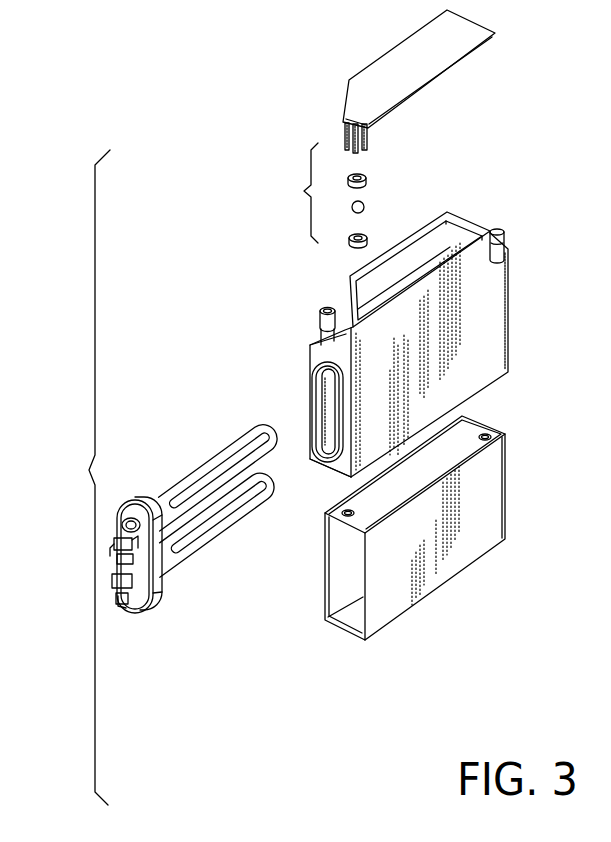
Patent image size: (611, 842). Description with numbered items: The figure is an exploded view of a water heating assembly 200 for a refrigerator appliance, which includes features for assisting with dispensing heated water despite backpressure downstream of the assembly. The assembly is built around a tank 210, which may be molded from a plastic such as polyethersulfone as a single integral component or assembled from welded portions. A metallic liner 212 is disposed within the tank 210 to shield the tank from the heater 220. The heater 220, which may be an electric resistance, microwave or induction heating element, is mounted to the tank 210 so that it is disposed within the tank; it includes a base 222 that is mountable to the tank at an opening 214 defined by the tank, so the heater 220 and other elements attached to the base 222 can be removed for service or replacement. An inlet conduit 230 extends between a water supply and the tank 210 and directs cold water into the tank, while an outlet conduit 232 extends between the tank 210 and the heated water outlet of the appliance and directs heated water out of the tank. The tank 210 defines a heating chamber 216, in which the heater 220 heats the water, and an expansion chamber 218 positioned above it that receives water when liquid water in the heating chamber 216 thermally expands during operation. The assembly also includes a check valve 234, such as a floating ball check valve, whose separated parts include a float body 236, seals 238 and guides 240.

The water heating assembly 200 is at (88, 471).
The tank 210 is at (505, 285).
The metallic liner 212 is at (510, 497).
The opening 214 is at (314, 465).
The heating chamber 216 is at (323, 385).
The expansion chamber 218 is at (453, 248).
The heater 220 is at (178, 481).
The base 222 is at (127, 499).
The inlet conduit 230 is at (319, 314).
The outlet conduit 232 is at (503, 233).
The check valve 234 is at (304, 191).
The float body 236 is at (365, 206).
The seals 238 is at (367, 180).
The guides 240 is at (368, 132).